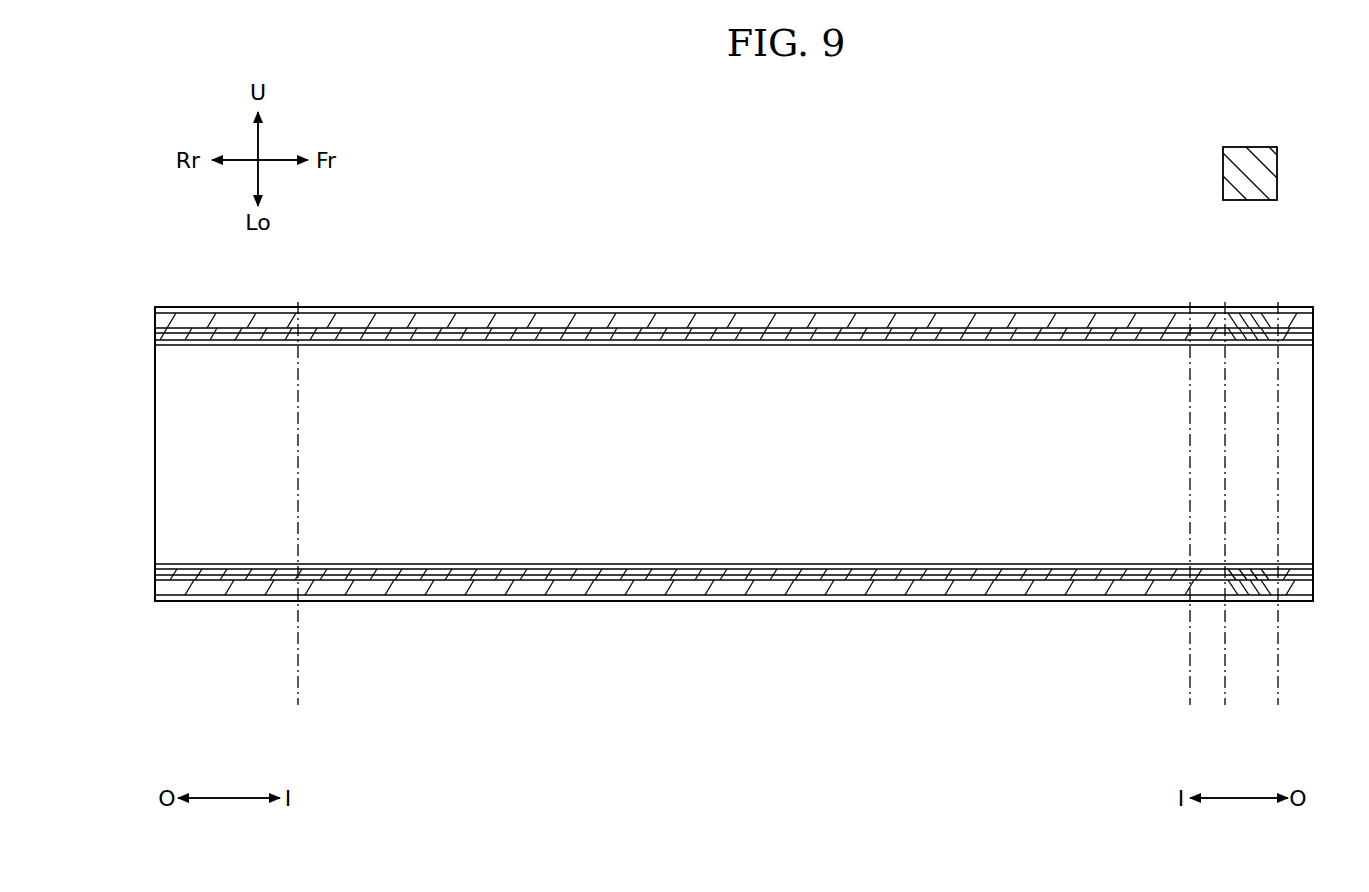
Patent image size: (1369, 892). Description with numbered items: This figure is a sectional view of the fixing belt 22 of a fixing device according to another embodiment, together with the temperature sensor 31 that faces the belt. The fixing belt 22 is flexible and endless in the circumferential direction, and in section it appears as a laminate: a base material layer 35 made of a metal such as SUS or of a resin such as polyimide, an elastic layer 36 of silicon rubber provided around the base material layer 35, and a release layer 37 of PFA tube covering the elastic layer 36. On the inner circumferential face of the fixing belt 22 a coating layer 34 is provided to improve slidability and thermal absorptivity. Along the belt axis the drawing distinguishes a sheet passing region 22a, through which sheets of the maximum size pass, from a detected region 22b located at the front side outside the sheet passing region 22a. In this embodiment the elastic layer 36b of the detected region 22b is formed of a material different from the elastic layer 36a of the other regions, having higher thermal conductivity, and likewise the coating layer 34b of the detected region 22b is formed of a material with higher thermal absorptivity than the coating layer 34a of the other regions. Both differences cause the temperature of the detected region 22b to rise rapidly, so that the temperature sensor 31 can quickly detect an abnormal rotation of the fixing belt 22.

The fixing belt 22 is at (734, 503).
The sheet passing region 22a is at (1188, 689).
The detected region 22b is at (1227, 689).
The reinforcement member 31 is at (1279, 142).
The coating layer 34 is at (734, 456).
The coating layer of regions other than the detected region 34a is at (1113, 567).
The coating layer of the detected region 34b is at (1250, 567).
The base material layer 35 is at (738, 575).
The elastic layer 36 is at (734, 454).
The elastic layer of regions other than the detected region 36a is at (1130, 325).
The elastic layer of the detected region 36b is at (1255, 325).
The release layer 37 is at (790, 598).